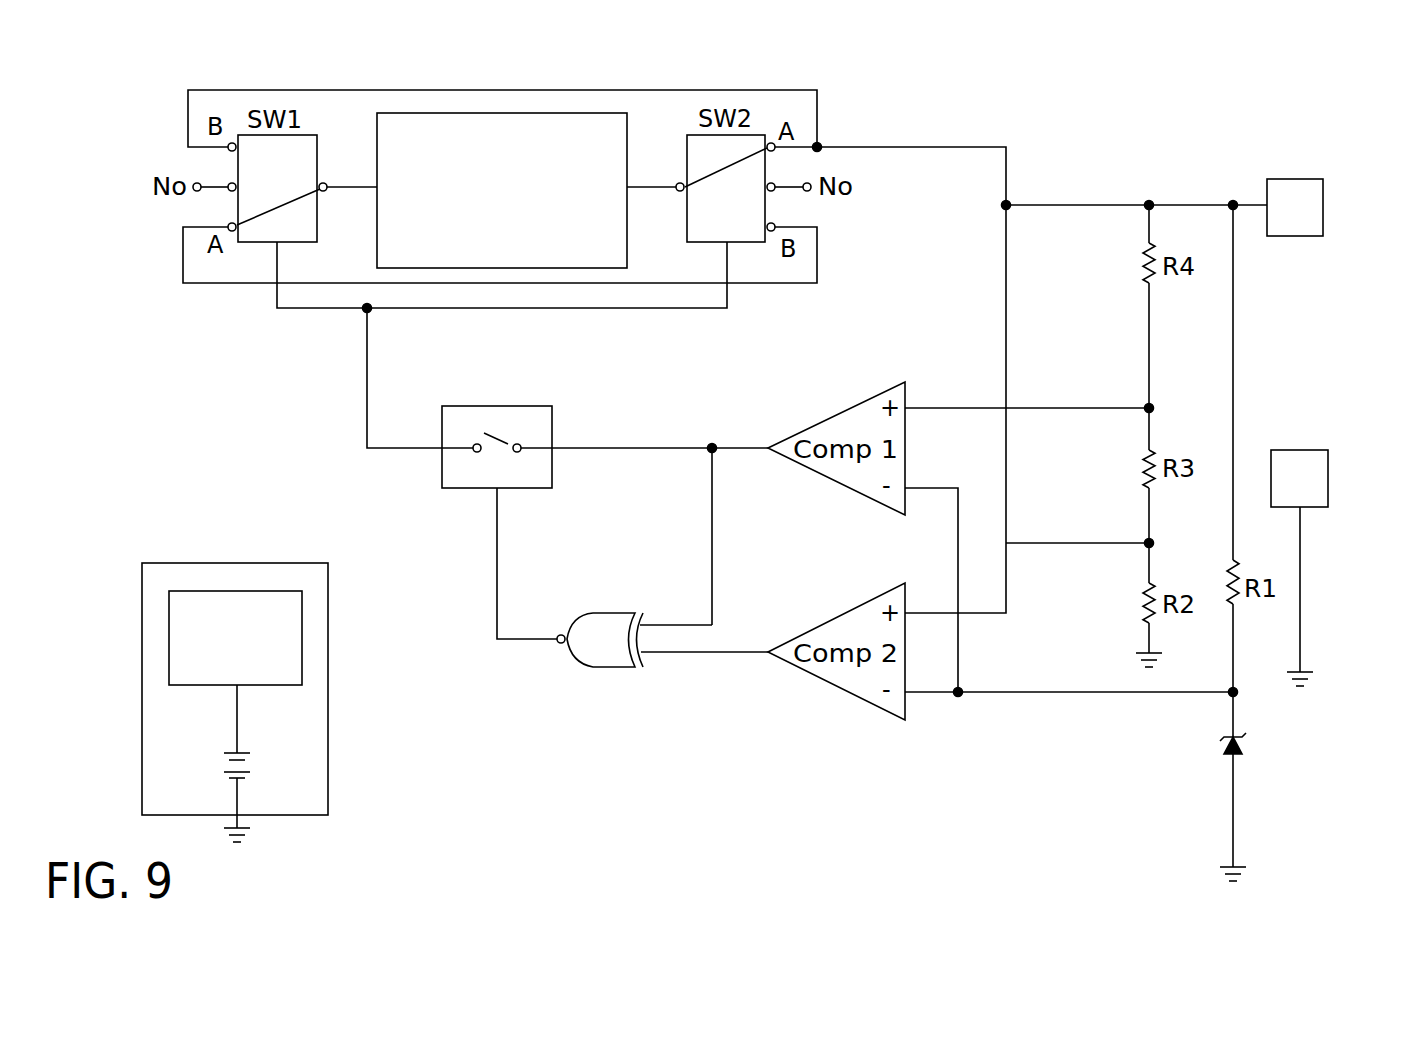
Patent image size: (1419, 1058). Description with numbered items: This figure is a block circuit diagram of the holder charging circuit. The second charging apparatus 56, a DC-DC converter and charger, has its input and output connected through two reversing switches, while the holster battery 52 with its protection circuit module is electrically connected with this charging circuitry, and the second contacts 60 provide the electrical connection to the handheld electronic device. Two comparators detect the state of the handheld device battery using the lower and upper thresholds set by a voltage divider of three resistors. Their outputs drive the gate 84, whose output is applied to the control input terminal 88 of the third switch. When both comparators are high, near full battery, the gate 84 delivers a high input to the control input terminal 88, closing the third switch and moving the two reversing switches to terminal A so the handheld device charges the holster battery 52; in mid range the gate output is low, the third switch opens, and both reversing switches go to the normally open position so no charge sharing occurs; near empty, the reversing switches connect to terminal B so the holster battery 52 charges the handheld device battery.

The second battery 52 is at (215, 563).
The second charging apparatus 56 is at (570, 113).
The second contacts 60 is at (1323, 212).
The gate 84 is at (608, 613).
The control input terminal of switch SW3 88 is at (552, 462).